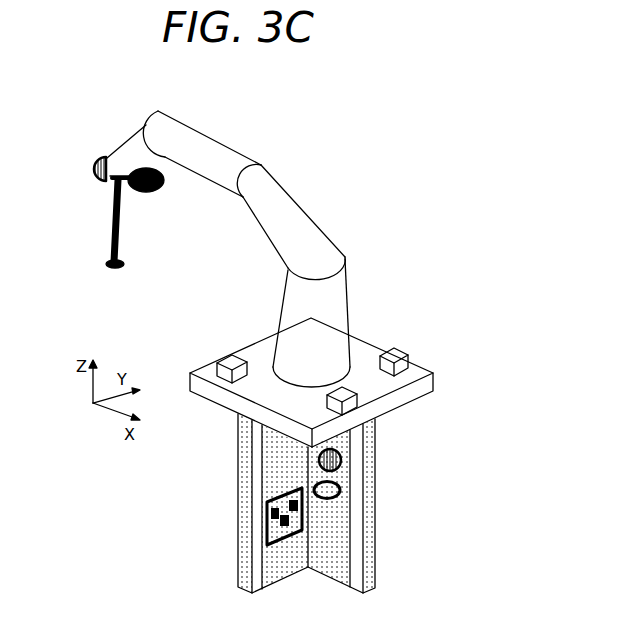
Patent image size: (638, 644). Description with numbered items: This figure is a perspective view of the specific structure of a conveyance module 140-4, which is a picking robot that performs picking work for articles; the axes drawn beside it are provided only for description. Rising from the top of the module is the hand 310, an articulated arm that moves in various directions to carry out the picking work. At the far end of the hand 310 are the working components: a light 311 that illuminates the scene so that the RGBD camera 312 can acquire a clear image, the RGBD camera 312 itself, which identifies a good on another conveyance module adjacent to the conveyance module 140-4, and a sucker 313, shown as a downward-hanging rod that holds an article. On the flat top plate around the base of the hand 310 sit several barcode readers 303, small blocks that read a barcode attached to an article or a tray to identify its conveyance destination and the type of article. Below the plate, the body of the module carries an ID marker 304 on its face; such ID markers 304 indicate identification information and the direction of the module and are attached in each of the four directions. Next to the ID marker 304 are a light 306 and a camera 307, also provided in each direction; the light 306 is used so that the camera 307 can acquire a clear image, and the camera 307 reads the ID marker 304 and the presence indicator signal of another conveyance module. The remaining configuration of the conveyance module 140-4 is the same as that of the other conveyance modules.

The conveyance module 140-4 is at (408, 198).
The hand 310 is at (284, 181).
The light 311 is at (93, 166).
The RGBD camera 312 is at (157, 190).
The sucker 313 is at (125, 264).
The barcode readers 303 is at (226, 357).
The ID markers 304 is at (266, 517).
The light 306 is at (343, 463).
The camera 307 is at (350, 502).